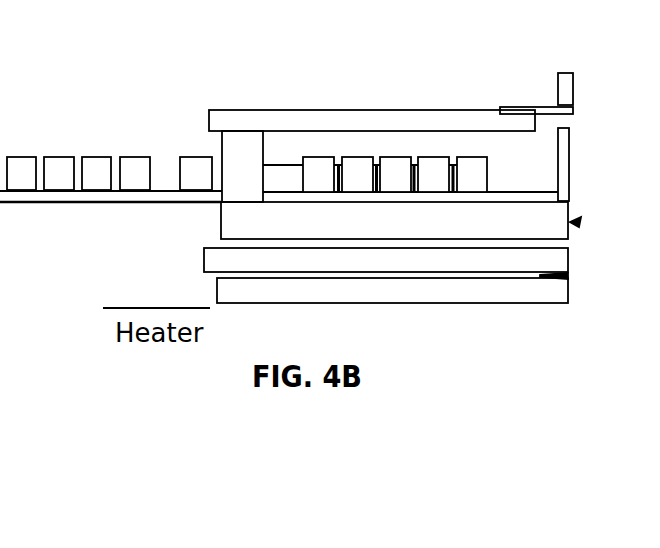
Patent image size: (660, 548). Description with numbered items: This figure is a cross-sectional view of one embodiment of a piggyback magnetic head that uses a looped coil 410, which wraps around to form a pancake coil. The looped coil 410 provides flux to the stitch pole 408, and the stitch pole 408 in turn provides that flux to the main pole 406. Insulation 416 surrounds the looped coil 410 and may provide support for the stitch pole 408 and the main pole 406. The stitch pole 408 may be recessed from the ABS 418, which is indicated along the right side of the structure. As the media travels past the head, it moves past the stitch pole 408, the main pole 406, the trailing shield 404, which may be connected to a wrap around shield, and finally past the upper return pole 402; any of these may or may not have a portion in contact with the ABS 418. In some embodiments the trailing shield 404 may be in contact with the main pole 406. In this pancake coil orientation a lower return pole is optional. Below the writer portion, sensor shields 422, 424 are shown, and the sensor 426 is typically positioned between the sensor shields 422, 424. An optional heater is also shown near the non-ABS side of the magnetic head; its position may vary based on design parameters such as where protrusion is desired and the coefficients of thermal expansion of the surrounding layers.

The upper return pole 402 is at (575, 88).
The trailing shield 404 is at (570, 170).
The main pole 406 is at (538, 107).
The stitch pole 408 is at (398, 110).
The looped coil 410 is at (468, 157).
The insulation 416 is at (447, 230).
The ABS 418 is at (576, 221).
The sensor shield 422 is at (205, 258).
The sensor shield 424 is at (216, 285).
The sensor 426 is at (562, 273).